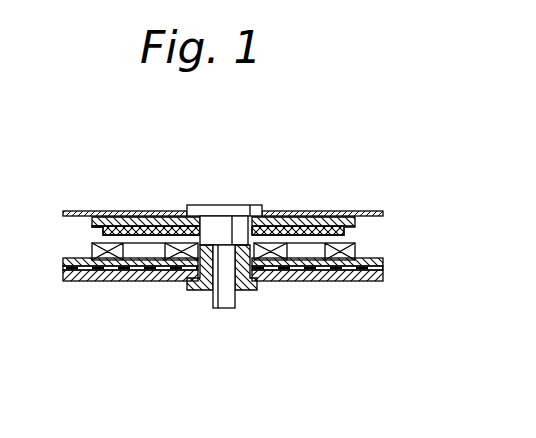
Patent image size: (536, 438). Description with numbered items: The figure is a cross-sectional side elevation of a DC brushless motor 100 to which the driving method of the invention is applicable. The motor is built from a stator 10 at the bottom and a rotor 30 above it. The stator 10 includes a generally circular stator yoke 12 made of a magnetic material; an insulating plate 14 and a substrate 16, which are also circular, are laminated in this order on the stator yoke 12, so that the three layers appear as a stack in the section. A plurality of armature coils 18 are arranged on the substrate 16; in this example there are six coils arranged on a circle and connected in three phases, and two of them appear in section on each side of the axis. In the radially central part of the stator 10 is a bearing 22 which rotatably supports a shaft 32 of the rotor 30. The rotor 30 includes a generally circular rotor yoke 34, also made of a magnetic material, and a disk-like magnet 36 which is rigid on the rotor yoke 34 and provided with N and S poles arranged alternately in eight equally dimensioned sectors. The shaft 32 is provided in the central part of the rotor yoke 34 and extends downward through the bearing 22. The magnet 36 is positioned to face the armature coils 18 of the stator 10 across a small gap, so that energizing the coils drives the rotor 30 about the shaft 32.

The DC brushless motor 100 is at (255, 266).
The stator 10 is at (253, 250).
The stator yoke 12 is at (373, 275).
The insulating plate 14 is at (383, 269).
The substrate 16 is at (387, 259).
The armature coils 18 is at (110, 245).
The bearing 22 is at (243, 293).
The rotor 30 is at (255, 240).
The shaft 32 is at (243, 205).
The rotor yoke 34 is at (340, 222).
The magnet 36 is at (353, 232).